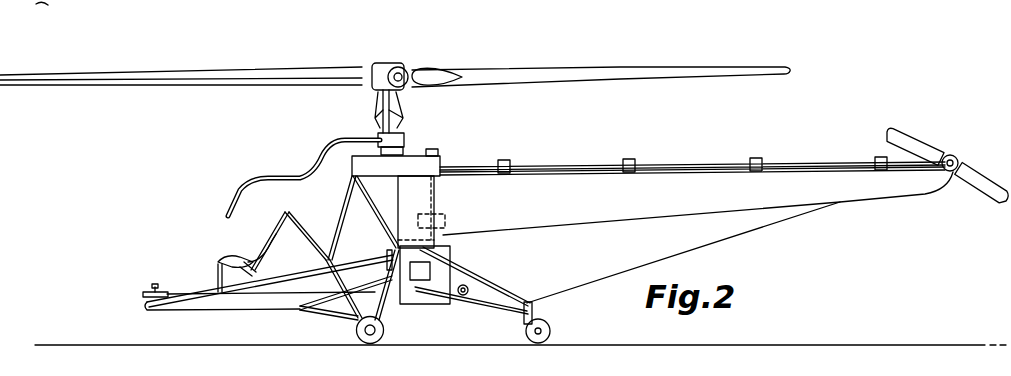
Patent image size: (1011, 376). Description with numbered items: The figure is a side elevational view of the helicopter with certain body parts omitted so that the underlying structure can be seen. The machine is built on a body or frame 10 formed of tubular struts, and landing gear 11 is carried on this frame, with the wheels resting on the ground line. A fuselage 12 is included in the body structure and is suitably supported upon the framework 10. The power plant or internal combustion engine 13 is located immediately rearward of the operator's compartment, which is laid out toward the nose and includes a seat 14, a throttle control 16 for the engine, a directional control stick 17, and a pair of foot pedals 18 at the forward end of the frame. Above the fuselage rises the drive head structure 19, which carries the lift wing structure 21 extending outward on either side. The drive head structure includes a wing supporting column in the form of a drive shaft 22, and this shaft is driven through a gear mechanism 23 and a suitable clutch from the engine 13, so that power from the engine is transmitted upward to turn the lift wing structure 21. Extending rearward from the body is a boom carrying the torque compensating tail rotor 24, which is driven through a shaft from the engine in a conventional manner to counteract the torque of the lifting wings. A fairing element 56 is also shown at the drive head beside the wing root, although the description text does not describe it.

The body or frame 10 is at (565, 173).
The landing gear 11 is at (325, 317).
The fuselage 12 is at (668, 173).
The power plant or internal combustion engine 13 is at (451, 262).
The seat 14 is at (270, 233).
The throttle control 16 is at (229, 256).
The directional control stick 17 is at (244, 187).
The foot pedals 18 is at (158, 285).
The drive head structure 19 is at (400, 62).
The lift wing structure 21 is at (198, 73).
The drive shaft 22 is at (383, 99).
The gear mechanism 23 is at (418, 155).
The torque compensating tail rotor 24 is at (906, 131).
The hub fairing 56 is at (436, 70).